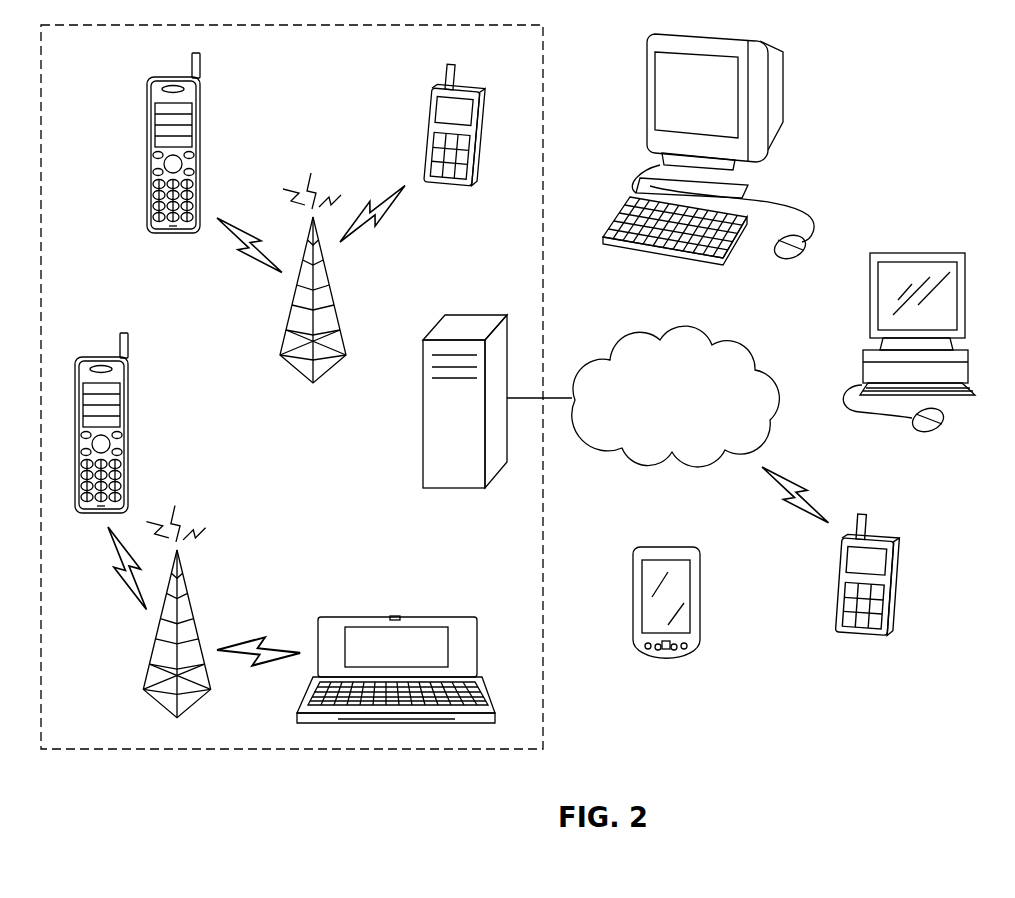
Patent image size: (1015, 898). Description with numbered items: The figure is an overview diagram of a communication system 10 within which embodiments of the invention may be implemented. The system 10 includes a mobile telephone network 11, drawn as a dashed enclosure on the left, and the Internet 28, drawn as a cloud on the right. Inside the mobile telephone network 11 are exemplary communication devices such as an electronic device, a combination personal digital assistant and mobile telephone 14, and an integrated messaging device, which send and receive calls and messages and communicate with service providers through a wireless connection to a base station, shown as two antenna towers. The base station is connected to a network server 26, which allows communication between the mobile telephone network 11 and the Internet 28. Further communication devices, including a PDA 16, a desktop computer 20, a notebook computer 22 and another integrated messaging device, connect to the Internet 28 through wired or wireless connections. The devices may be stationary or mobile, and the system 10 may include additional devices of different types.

The system 10 is at (953, 499).
The mobile telephone network 11 is at (81, 61).
The combination personal digital assistant and mobile telephone 14 is at (396, 616).
The PDA 16 is at (700, 598).
The desktop computer 20 is at (783, 86).
The notebook computer 22 is at (918, 253).
The network server 26 is at (423, 415).
The Internet 28 is at (710, 335).